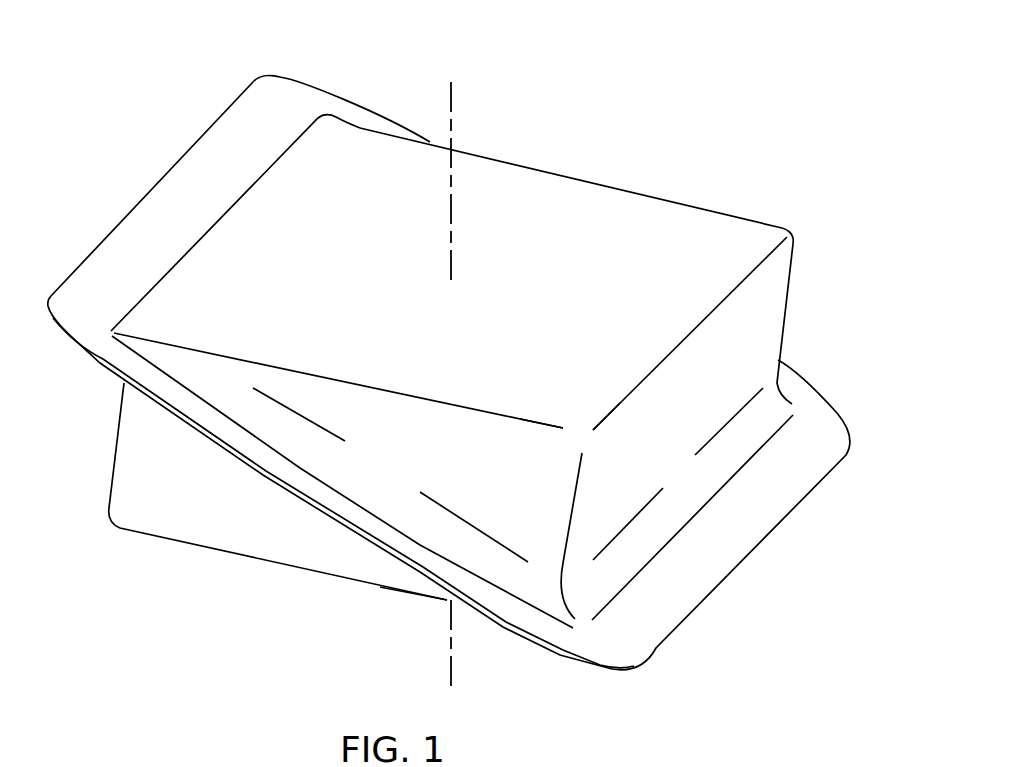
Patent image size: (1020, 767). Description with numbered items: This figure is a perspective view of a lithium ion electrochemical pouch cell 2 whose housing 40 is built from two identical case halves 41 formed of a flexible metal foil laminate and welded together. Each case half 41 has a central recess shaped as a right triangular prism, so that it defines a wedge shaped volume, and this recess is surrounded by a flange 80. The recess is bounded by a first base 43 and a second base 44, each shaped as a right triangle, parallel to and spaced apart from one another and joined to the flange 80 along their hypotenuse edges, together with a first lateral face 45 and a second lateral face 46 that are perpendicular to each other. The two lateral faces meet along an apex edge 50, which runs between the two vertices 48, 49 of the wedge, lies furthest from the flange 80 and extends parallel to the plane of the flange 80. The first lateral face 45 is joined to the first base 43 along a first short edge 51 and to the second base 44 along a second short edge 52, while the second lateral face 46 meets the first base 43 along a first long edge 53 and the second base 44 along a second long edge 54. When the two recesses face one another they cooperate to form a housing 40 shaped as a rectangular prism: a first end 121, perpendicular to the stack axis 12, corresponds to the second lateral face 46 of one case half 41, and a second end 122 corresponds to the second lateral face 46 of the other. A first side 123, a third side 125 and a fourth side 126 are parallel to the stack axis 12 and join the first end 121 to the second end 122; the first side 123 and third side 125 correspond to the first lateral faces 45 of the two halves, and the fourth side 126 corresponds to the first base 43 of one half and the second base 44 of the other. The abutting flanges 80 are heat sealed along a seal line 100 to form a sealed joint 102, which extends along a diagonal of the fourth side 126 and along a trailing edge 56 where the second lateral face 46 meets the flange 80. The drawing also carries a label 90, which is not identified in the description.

The lithium ion electrochemical pouch cell 2 is at (198, 54).
The stack axis 12 is at (455, 128).
The housing 40 is at (645, 203).
The case half 41 is at (223, 518).
The first base 43 is at (440, 478).
The second base 44 is at (145, 512).
The first lateral face 45 is at (717, 415).
The second lateral face 46 is at (730, 222).
The vertex 48 is at (583, 440).
The vertex 49 is at (793, 228).
The apex edge 50 is at (703, 313).
The first short edge 51 is at (570, 515).
The second short edge 52 is at (786, 338).
The first long edge 53 is at (267, 370).
The second long edge 54 is at (553, 170).
The trailing edge 56 is at (230, 222).
The flange 80 is at (118, 248).
The rim 90 is at (92, 363).
The seal line 100 is at (677, 540).
The sealed joint 102 is at (692, 517).
The first end 121 is at (381, 143).
The second end 122 is at (463, 603).
The first side 123 is at (678, 474).
The third side 125 is at (110, 468).
The fourth side 126 is at (474, 527).